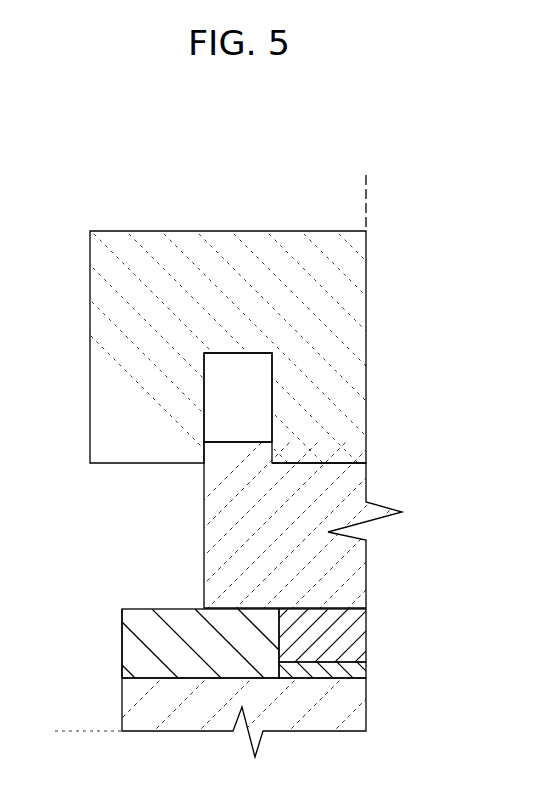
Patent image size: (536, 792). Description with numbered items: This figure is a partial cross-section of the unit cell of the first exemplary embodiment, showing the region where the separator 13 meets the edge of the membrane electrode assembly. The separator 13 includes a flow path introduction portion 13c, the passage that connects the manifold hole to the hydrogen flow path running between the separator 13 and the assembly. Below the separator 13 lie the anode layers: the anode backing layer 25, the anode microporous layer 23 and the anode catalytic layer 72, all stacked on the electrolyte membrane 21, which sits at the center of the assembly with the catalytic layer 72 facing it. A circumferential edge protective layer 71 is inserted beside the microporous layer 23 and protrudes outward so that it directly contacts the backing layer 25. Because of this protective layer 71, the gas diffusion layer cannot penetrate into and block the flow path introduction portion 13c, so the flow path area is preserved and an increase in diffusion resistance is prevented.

The separator 13 is at (341, 318).
The flow path introduction portion 13c is at (240, 378).
The anode backing layer 25 is at (343, 557).
The circumferential edge protective layer 71 is at (136, 648).
The anode microporous layer 23 is at (345, 645).
The anode catalytic layer 72 is at (357, 670).
The electrolyte membrane 21 is at (297, 715).